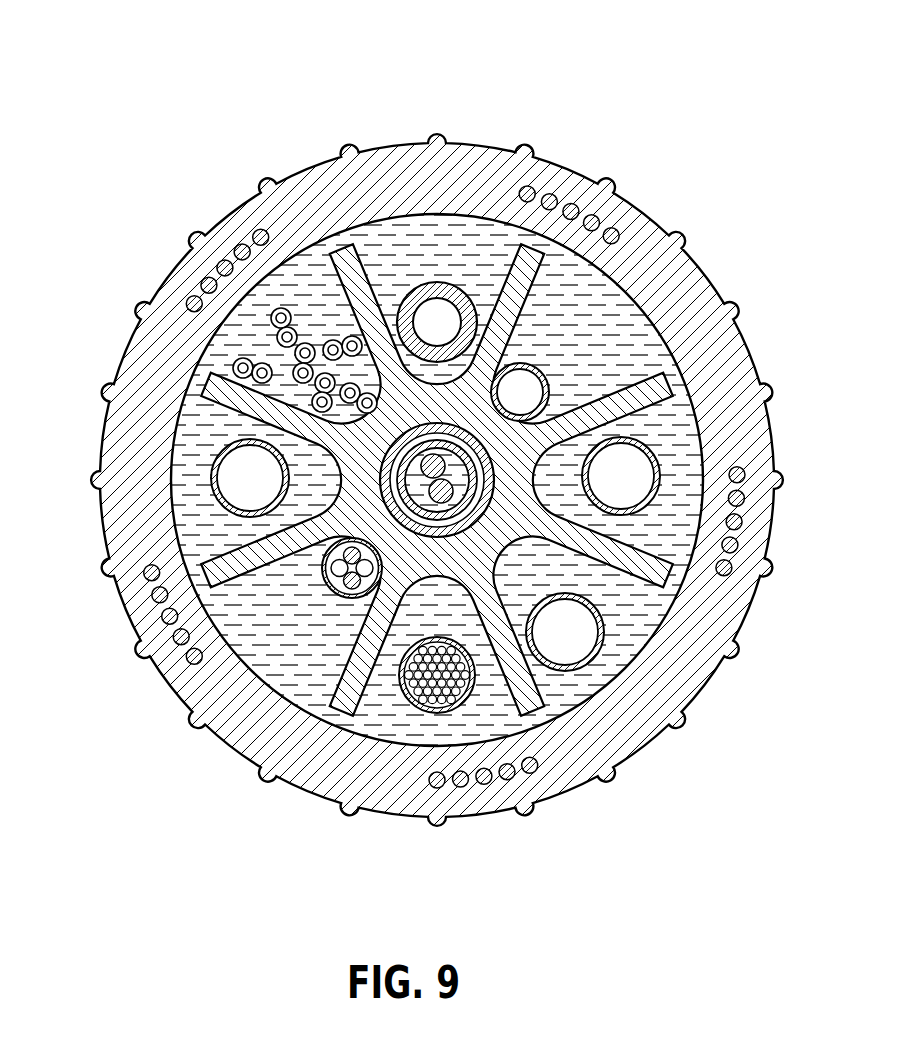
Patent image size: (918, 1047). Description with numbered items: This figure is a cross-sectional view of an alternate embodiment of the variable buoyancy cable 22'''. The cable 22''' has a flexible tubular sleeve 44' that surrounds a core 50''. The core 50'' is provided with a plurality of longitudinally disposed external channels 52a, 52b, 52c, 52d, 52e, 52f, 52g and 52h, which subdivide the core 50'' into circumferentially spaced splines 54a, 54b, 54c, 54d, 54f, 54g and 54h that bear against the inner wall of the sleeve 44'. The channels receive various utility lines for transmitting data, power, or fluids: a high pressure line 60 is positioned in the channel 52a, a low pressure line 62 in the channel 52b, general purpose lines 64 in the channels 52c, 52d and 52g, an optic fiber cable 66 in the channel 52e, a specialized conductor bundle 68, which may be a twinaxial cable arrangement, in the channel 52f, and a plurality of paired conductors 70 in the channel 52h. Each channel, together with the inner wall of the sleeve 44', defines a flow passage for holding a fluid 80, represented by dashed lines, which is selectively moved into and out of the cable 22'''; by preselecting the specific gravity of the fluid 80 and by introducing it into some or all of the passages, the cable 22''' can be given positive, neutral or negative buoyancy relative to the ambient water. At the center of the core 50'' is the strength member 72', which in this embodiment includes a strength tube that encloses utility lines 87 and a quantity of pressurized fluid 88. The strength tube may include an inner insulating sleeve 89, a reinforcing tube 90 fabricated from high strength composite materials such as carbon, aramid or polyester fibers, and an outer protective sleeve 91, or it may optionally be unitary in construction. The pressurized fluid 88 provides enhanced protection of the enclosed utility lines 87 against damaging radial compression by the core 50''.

The cable 22''' is at (437, 470).
The flexible tubular sleeve 44' is at (437, 475).
The core 50'' is at (437, 419).
The channel 52a is at (415, 252).
The channel 52b is at (576, 303).
The channel 52c is at (677, 457).
The channel 52d is at (690, 645).
The channel 52e is at (392, 748).
The channel 52f is at (288, 648).
The channel 52g is at (200, 505).
The channel 52h is at (252, 347).
The spline 54a is at (372, 318).
The spline 54b is at (510, 305).
The spline 54c is at (656, 418).
The spline 54d is at (612, 580).
The spline 54f is at (347, 705).
The spline 54g is at (217, 570).
The spline 54h is at (213, 380).
The high pressure line 60 is at (455, 300).
The low pressure line 62 is at (640, 346).
The general purpose lines 64 is at (663, 470).
The optic fiber cable 66 is at (463, 703).
The specialized conductor bundle 68 is at (331, 589).
The paired conductors 70 is at (262, 312).
The strength member 72' is at (529, 376).
The fluid 80 is at (393, 266).
The utility lines 87 is at (424, 479).
The pressurized fluid 88 is at (626, 535).
The inner insulating sleeve 89 is at (418, 463).
The reinforcing tube 90 is at (490, 558).
The outer protective sleeve 91 is at (481, 477).